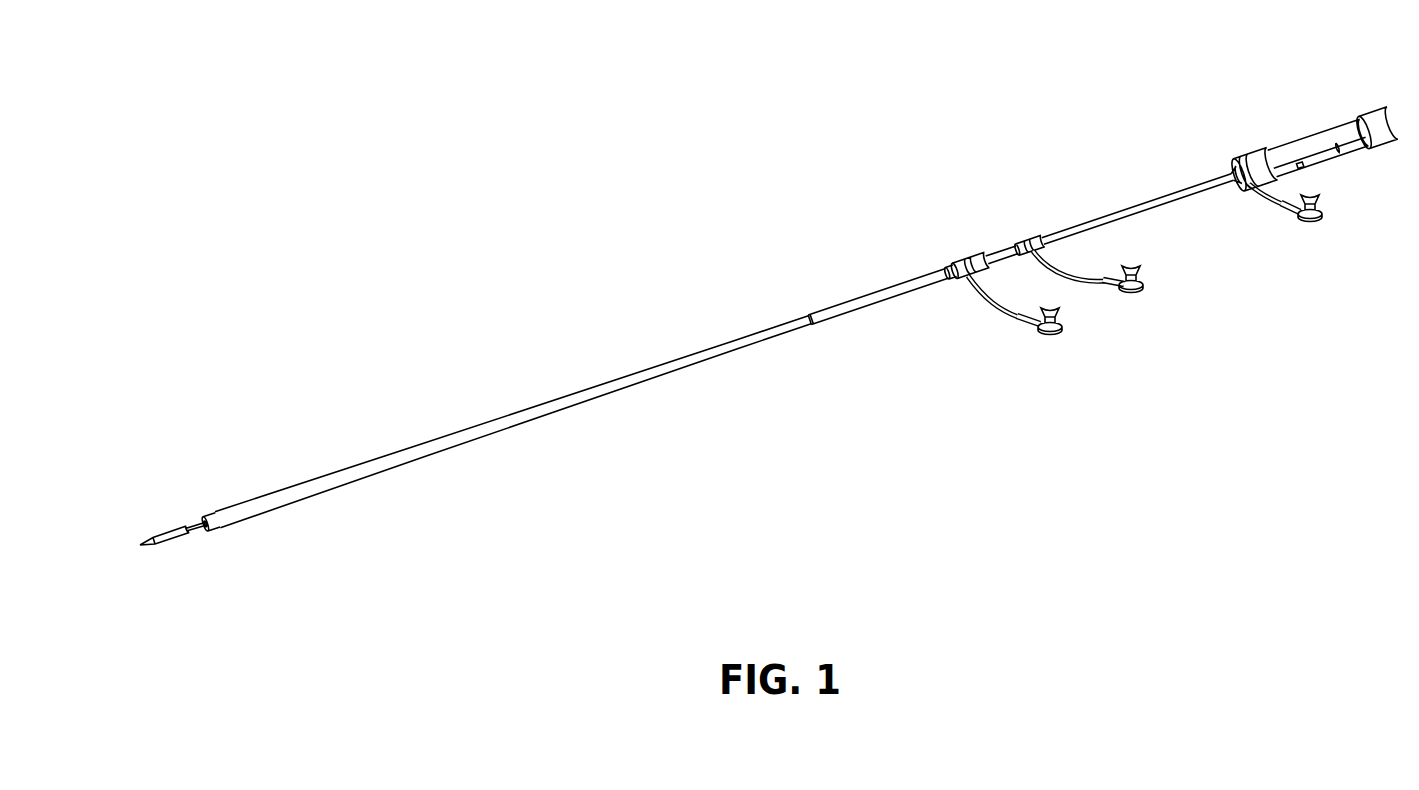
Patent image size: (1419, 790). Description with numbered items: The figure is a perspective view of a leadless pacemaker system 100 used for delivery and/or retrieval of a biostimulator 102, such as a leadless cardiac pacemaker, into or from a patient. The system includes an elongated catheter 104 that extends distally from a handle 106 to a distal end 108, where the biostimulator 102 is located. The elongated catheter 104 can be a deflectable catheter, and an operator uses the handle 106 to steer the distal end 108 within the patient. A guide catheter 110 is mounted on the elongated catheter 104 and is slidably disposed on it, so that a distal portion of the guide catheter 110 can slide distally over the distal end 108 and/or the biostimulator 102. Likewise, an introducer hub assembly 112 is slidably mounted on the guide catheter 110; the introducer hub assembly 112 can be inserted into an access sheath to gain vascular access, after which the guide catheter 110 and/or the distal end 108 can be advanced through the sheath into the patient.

The leadless pacemaker system 100 is at (406, 221).
The biostimulator 102 is at (171, 523).
The elongated catheter 104 is at (1116, 212).
The handle 106 is at (1306, 133).
The distal end 108 is at (197, 536).
The guide catheter 110 is at (681, 356).
The introducer hub assembly 112 is at (869, 292).